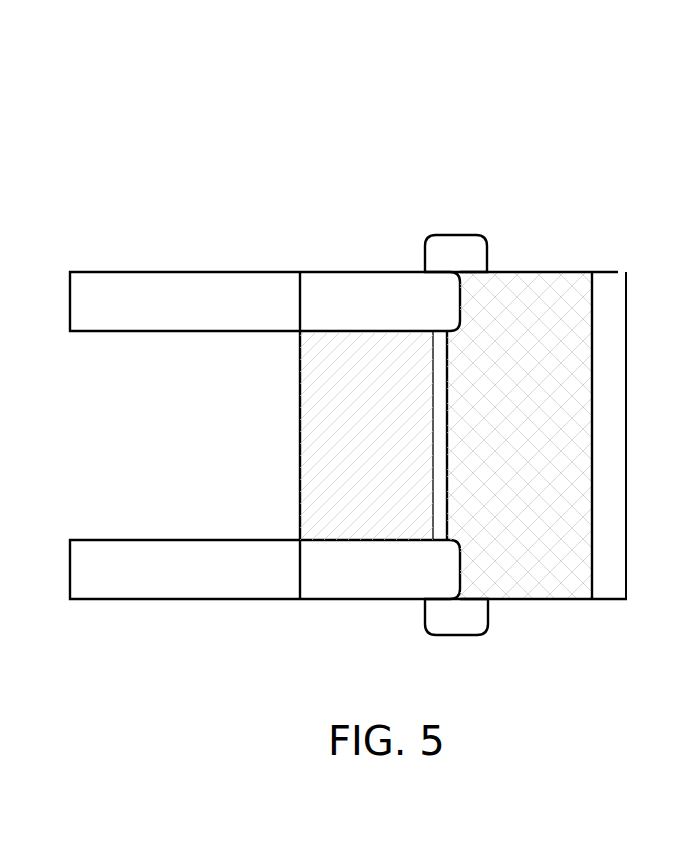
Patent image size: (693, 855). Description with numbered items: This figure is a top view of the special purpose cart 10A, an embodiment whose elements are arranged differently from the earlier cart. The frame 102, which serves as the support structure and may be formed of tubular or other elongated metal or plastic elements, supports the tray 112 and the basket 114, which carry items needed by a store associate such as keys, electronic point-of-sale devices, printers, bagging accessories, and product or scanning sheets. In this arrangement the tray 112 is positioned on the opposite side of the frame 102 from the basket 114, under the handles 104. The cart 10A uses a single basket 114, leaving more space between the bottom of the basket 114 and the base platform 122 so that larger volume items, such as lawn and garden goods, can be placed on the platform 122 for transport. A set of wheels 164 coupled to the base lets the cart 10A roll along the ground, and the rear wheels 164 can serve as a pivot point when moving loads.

The special purpose cart 10A is at (486, 122).
The frame 102 is at (337, 278).
The handles 104 is at (188, 272).
The tray 112 is at (300, 435).
The basket 114 is at (570, 278).
The platform 122 is at (614, 278).
The wheels 164 is at (457, 235).